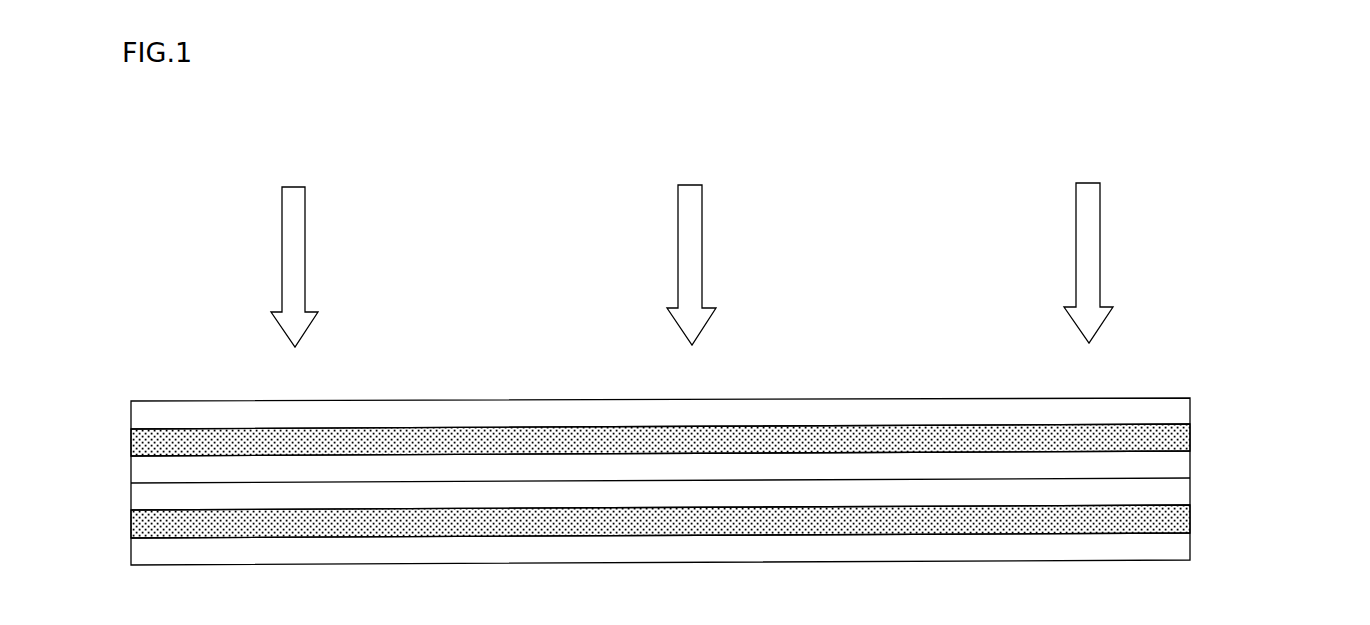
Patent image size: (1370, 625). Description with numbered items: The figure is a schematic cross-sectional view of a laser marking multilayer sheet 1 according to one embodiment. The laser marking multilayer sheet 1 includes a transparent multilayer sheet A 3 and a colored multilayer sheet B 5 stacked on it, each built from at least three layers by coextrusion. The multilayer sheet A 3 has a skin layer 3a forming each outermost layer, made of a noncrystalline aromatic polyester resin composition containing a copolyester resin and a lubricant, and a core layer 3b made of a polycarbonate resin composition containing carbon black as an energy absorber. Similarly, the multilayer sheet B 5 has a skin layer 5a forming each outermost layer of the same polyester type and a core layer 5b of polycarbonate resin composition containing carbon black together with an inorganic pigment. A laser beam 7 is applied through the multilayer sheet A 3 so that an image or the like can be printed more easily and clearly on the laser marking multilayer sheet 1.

The laser marking multilayer sheet 1 is at (731, 328).
The multilayer sheet A 3 is at (731, 432).
The skin layer of multilayer sheet A 3a is at (1184, 405).
The core layer of multilayer sheet A 3b is at (1184, 434).
The multilayer sheet B 5 is at (731, 522).
The skin layer of multilayer sheet B 5a is at (1184, 492).
The core layer of multilayer sheet B 5b is at (1184, 518).
The laser beam 7 is at (300, 233).